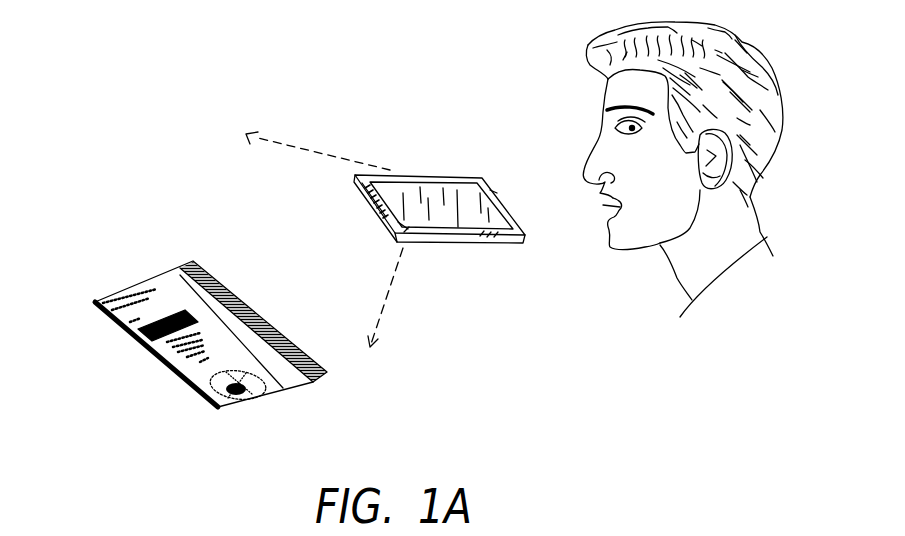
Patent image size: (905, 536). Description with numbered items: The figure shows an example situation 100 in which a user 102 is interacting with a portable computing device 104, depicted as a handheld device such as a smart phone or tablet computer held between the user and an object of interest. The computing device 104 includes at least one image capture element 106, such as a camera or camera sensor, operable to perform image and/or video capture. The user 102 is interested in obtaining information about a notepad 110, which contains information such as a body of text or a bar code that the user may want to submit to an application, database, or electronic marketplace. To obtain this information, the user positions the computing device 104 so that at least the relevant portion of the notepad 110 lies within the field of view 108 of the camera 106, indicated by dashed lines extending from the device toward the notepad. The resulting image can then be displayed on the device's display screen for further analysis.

The example situation 100 is at (106, 89).
The user 102 is at (542, 79).
The computing device 104 is at (443, 245).
The image capture element 106 is at (423, 177).
The field of view 108 is at (312, 151).
The notepad 110 is at (160, 285).